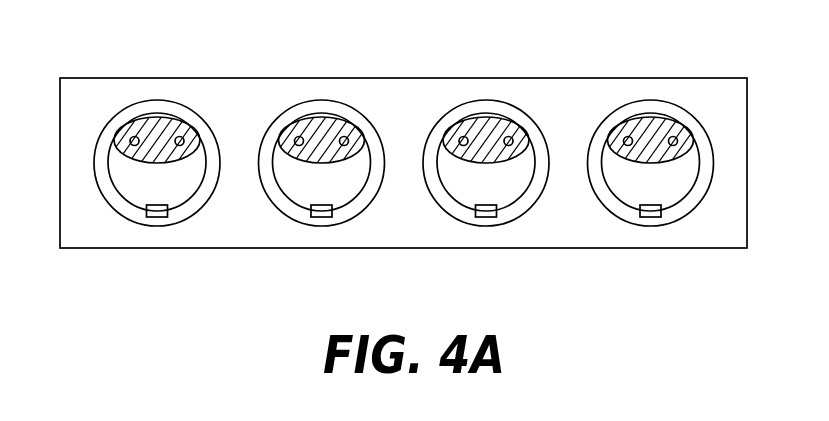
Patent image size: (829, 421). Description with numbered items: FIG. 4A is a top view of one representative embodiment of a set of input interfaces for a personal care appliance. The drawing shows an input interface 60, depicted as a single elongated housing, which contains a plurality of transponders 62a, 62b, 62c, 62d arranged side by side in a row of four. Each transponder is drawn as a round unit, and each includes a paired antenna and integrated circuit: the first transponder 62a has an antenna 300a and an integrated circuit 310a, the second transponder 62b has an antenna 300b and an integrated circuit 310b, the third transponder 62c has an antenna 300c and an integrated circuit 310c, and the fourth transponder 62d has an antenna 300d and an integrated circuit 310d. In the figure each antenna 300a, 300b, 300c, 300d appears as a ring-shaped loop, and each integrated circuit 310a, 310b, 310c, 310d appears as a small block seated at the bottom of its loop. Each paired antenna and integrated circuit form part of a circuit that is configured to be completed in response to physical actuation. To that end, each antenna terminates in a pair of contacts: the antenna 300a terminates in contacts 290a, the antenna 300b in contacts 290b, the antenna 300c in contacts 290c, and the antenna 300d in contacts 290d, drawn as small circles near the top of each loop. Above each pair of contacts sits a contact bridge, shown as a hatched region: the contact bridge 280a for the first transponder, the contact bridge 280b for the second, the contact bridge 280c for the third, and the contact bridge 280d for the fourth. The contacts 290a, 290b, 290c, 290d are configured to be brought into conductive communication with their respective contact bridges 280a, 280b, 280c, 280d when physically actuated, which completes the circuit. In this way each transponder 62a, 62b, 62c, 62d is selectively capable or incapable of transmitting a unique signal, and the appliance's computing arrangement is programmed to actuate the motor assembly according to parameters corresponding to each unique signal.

The input interface 60 is at (95, 86).
The transponder 62a is at (156, 150).
The antenna 300a is at (172, 207).
The integrated circuit 310a is at (153, 217).
The contact bridge 280a is at (177, 119).
The contacts 290a is at (176, 137).
The transponder 62b is at (321, 150).
The antenna 300b is at (336, 207).
The integrated circuit 310b is at (318, 217).
The contact bridge 280b is at (342, 119).
The contacts 290b is at (340, 137).
The transponder 62c is at (485, 150).
The antenna 300c is at (501, 207).
The integrated circuit 310c is at (482, 217).
The contact bridge 280c is at (506, 119).
The contacts 290c is at (505, 137).
The transponder 62d is at (650, 150).
The antenna 300d is at (666, 207).
The integrated circuit 310d is at (646, 217).
The contact bridge 280d is at (670, 119).
The contacts 290d is at (670, 137).